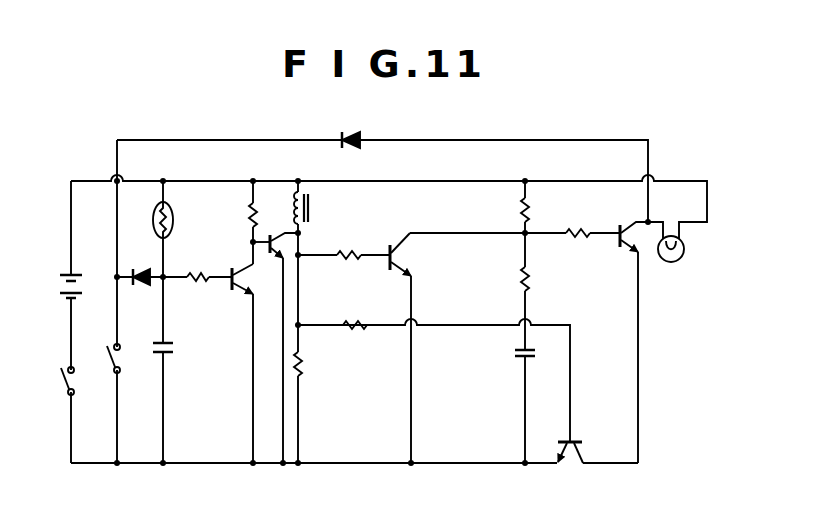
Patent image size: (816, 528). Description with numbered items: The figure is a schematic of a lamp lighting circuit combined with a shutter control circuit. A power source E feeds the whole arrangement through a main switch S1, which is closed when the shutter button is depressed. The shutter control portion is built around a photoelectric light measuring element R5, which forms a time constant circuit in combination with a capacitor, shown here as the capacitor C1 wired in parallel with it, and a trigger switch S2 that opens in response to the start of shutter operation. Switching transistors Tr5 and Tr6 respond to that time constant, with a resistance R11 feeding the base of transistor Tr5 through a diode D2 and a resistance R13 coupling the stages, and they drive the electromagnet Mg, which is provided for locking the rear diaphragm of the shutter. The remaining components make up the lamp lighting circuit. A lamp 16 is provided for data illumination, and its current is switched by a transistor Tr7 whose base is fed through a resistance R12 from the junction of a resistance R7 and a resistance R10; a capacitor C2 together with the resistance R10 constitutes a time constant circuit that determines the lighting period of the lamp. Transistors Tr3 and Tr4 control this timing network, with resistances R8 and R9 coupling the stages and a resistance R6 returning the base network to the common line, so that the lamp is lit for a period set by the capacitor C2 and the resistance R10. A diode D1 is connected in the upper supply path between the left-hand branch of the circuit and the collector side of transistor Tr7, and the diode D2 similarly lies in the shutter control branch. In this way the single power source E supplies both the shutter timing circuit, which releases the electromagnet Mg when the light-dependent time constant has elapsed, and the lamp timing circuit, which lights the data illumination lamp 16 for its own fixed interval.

The diode D1 is at (354, 130).
The diode D2 is at (142, 289).
The power source E is at (63, 286).
The photoelectric light measuring element R5 is at (174, 220).
The resistance R6 is at (310, 364).
The resistance R7 is at (537, 210).
The resistance R8 is at (349, 269).
The resistance R9 is at (355, 315).
The resistance R10 is at (541, 279).
The resistance R11 is at (200, 291).
The resistor R12 is at (582, 249).
The resistance R13 is at (268, 216).
The electromagnet Mg is at (316, 208).
The transistor Tr3 is at (398, 262).
The transistor Tr4 is at (571, 455).
The switching transistor Tr5 is at (242, 290).
The switching transistor Tr6 is at (290, 247).
The transistor Tr7 is at (632, 225).
The capacitor C1 is at (174, 353).
The capacitor C2 is at (516, 356).
The main switch S1 is at (60, 385).
The trigger switch S2 is at (107, 363).
The lamp 16 is at (671, 262).